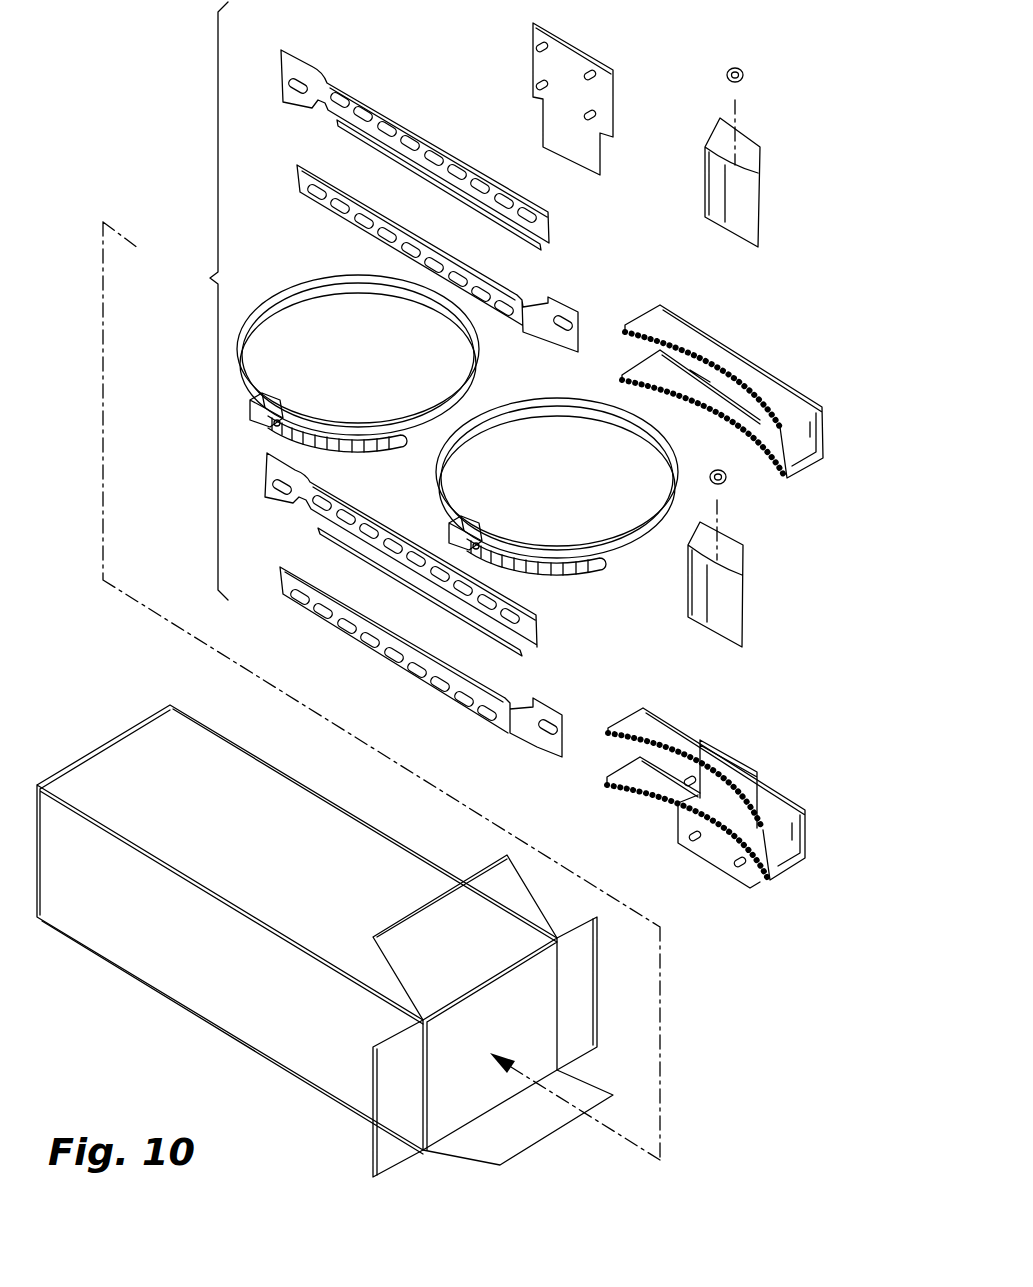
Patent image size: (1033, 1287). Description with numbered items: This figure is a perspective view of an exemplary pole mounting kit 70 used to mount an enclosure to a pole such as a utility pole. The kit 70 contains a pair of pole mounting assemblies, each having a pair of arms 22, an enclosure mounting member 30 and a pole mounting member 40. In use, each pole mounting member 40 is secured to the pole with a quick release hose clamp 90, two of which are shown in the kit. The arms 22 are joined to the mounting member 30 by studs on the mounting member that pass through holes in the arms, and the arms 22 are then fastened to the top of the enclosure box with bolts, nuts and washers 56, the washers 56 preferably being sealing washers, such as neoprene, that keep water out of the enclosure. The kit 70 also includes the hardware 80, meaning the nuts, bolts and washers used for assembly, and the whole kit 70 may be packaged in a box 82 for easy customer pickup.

The arms 22 is at (372, 90).
The enclosure mounting member 30 is at (617, 14).
The pole mounting member 40 is at (724, 328).
The washers 56 is at (727, 72).
The pole mounting kit 70 is at (199, 301).
The hardware 80 is at (762, 198).
The box 82 is at (88, 738).
The quick release hose clamp 90 is at (368, 460).